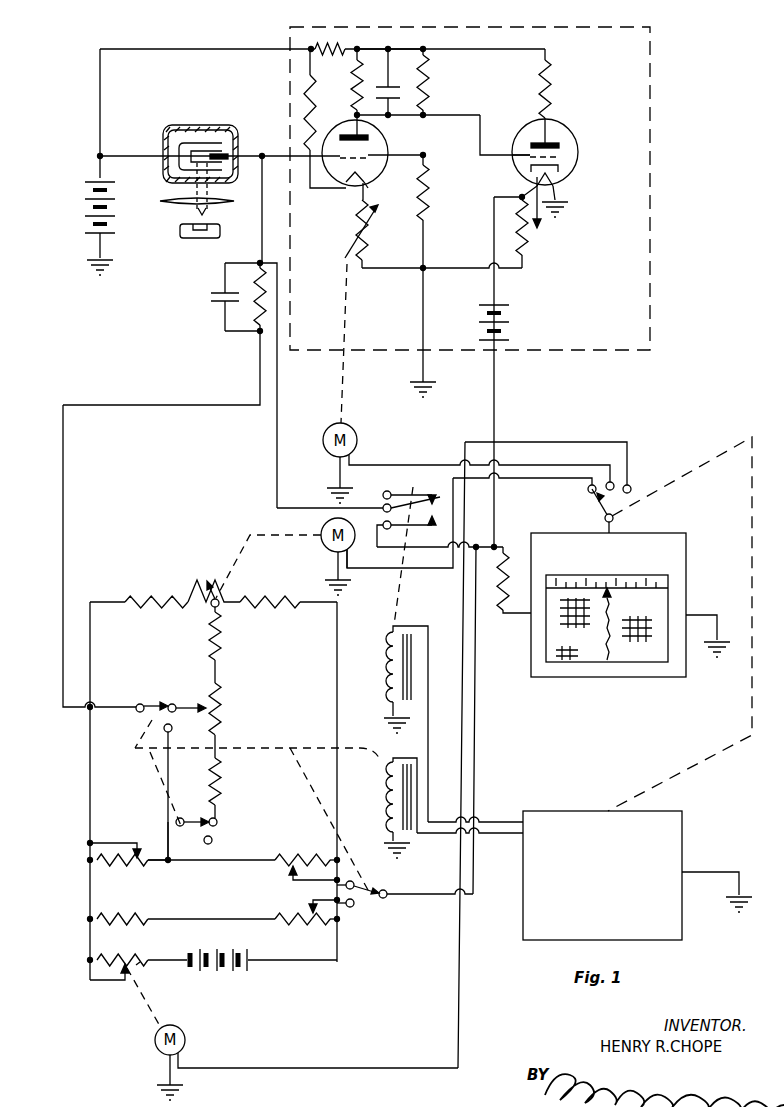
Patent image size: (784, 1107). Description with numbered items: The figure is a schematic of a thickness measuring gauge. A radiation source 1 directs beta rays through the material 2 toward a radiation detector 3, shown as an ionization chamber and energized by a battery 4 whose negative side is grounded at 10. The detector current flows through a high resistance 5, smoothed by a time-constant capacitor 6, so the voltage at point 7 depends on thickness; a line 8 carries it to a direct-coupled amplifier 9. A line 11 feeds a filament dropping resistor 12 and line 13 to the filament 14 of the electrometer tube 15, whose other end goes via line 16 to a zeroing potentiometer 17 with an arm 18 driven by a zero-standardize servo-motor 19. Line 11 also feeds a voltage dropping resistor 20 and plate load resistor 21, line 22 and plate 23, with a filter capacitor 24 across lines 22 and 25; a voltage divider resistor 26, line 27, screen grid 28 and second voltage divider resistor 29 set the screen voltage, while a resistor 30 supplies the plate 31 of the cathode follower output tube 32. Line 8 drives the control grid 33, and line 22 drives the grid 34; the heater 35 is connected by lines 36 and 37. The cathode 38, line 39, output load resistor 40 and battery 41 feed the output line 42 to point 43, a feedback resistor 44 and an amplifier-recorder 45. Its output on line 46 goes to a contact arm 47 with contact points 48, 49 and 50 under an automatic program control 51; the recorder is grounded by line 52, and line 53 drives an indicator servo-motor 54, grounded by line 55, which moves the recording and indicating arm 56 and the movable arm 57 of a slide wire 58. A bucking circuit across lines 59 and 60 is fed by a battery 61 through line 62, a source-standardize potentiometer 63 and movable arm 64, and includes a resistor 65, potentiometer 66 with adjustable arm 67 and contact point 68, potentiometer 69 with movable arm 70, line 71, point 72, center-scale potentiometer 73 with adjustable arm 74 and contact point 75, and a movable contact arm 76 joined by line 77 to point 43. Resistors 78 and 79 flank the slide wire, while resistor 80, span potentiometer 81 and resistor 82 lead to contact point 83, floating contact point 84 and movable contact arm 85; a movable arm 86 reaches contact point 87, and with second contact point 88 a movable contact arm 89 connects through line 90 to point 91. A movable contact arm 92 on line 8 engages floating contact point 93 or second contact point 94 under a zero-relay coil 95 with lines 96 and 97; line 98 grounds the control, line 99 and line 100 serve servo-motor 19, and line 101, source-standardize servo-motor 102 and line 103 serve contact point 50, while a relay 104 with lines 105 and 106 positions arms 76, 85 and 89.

The radiation source 1 is at (182, 238).
The material 2 is at (170, 205).
The radiation detector 3 is at (183, 125).
The battery 4 is at (86, 211).
The high resistance 5 is at (253, 306).
The time-constant capacitor 6 is at (218, 300).
The point 7 is at (247, 157).
The line 8 is at (285, 156).
The direct-coupled amplifier 9 is at (650, 148).
The ground 10 is at (88, 262).
The line 11 is at (130, 49).
The filament dropping resistor 12 is at (313, 90).
The line 13 is at (301, 189).
The filament 14 is at (340, 182).
The electrometer tube 15 is at (381, 136).
The line 16 is at (361, 201).
The zeroing potentiometer 17 is at (368, 235).
The arm 18 is at (338, 246).
The zero-standardize servo-motor 19 is at (357, 444).
The voltage dropping resistor 20 is at (345, 49).
The plate load resistor 21 is at (355, 74).
The line 22 is at (480, 118).
The plate 23 is at (356, 115).
The filter capacitor 24 is at (393, 82).
The line 25 is at (400, 49).
The voltage divider resistor 26 is at (430, 82).
The line 27 is at (420, 156).
The screen grid 28 is at (375, 178).
The second voltage divider resistor 29 is at (429, 187).
The resistor 30 is at (552, 91).
The plate 31 is at (541, 141).
The cathode follower output tube 32 is at (576, 146).
The control grid 33 is at (333, 143).
The grid 34 is at (527, 156).
The heater 35 is at (562, 181).
The line 36 is at (562, 204).
The line 37 is at (541, 230).
The cathode 38 is at (523, 170).
The line 39 is at (494, 209).
The output load resistor 40 is at (513, 239).
The battery 41 is at (510, 312).
The output line 42 is at (495, 466).
The point 43 is at (494, 546).
The feedback resistor 44 is at (498, 604).
The amplifier-recorder 45 is at (641, 676).
The line 46 is at (614, 522).
The contact arm 47 is at (597, 513).
The contact point 48 is at (586, 496).
The contact point 49 is at (615, 477).
The contact point 50 is at (631, 489).
The automatic program control 51 is at (687, 813).
The line 52 is at (713, 610).
The line 53 is at (530, 481).
The indicator servo-motor 54 is at (317, 532).
The line 55 is at (332, 568).
The recording and indicating arm 56 is at (614, 595).
The movable arm 57 is at (218, 612).
The slide wire 58 is at (216, 573).
The line 59 is at (88, 798).
The line 60 is at (340, 944).
The battery 61 is at (243, 976).
The line 62 is at (146, 970).
The source-standardize potentiometer 63 is at (117, 954).
The movable arm 64 is at (125, 986).
The resistor 65 is at (134, 913).
The potentiometer 66 is at (312, 930).
The adjustable arm 67 is at (309, 904).
The contact point 68 is at (354, 906).
The potentiometer 69 is at (148, 870).
The movable arm 70 is at (138, 840).
The line 71 is at (168, 830).
The point 72 is at (181, 870).
The center-scale potentiometer 73 is at (325, 855).
The adjustable arm 74 is at (291, 882).
The contact point 75 is at (342, 874).
The movable contact arm 76 is at (384, 890).
The line 77 is at (449, 901).
The resistor 78 is at (165, 592).
The resistor 79 is at (266, 608).
The resistor 80 is at (208, 632).
The span potentiometer 81 is at (224, 705).
The resistor 82 is at (220, 778).
The contact point 83 is at (225, 823).
The floating contact point 84 is at (220, 843).
The movable contact arm 85 is at (196, 812).
The movable arm 86 is at (196, 707).
The contact point 87 is at (166, 706).
The second contact point 88 is at (171, 734).
The movable contact arm 89 is at (145, 723).
The line 90 is at (63, 502).
The point 91 is at (258, 334).
The movable contact arm 92 is at (398, 494).
The floating contact point 93 is at (382, 500).
The second contact point 94 is at (382, 528).
The zero-relay coil 95 is at (385, 671).
The line 96 is at (390, 714).
The line 97 is at (510, 820).
The line 98 is at (719, 872).
The line 99 is at (559, 466).
The line 100 is at (334, 465).
The line 101 is at (565, 442).
The source-standardize servo-motor 102 is at (155, 1040).
The line 103 is at (163, 1072).
The relay 104 is at (382, 821).
The line 105 is at (393, 846).
The line 106 is at (520, 837).